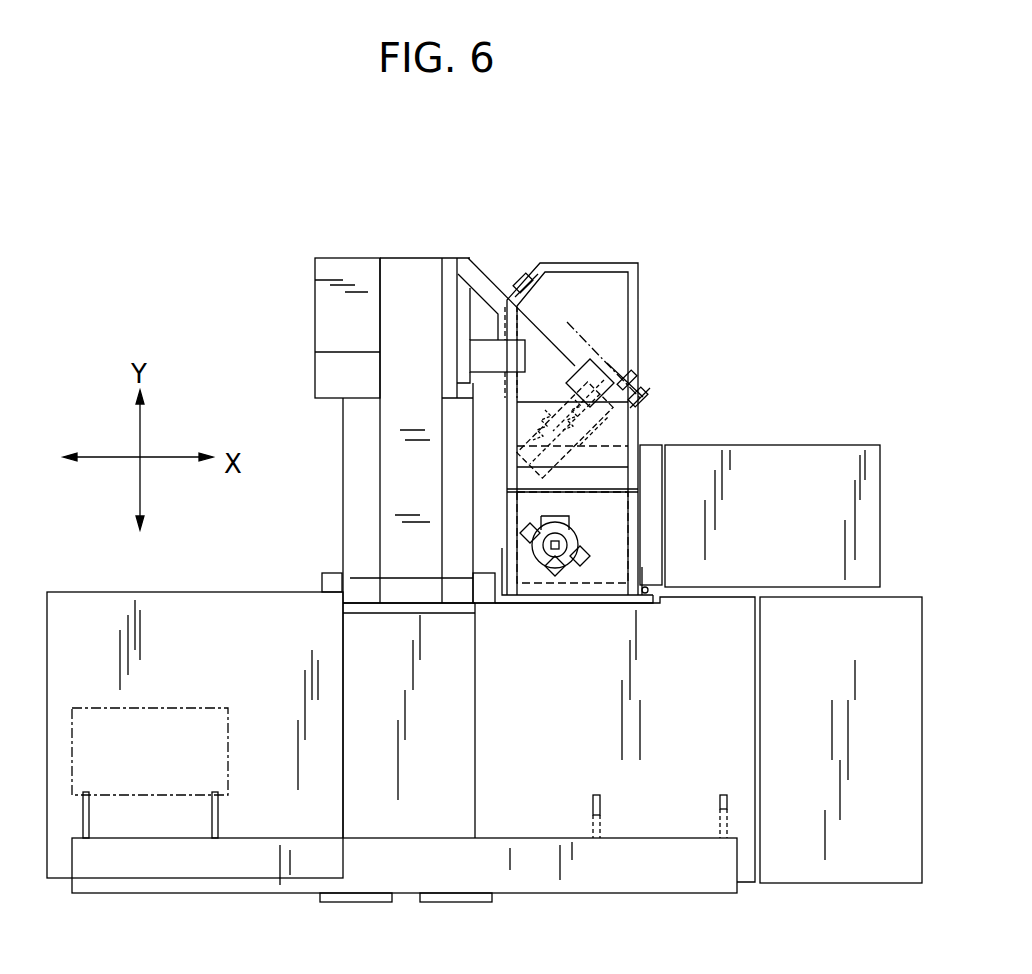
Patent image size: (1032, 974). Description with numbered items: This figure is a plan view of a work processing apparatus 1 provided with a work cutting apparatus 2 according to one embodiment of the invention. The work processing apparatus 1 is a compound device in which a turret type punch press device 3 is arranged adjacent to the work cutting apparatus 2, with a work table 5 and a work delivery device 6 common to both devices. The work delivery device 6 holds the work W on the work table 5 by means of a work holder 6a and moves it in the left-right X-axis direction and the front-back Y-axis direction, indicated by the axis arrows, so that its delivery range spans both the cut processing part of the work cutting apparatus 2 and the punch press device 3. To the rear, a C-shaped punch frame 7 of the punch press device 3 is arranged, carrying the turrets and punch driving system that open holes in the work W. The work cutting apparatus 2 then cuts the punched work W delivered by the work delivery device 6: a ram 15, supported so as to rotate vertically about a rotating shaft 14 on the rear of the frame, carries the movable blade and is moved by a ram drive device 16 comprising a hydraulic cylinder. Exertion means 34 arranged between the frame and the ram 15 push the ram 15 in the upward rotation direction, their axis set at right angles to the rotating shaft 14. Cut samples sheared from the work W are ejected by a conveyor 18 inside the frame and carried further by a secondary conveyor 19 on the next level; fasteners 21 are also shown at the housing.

The work processing apparatus 1 is at (220, 305).
The work cutting apparatus 2 is at (650, 308).
The turret type punch press device 3 is at (391, 249).
The work table 5 is at (555, 812).
The work delivery device 6 is at (232, 873).
The work holder 6a is at (88, 815).
The C-shaped punch frame 7 is at (393, 522).
The rotating shaft 14 is at (567, 322).
The ram 15 is at (625, 340).
The ram drive device 16 is at (575, 548).
The conveyor 18 is at (648, 455).
The secondary conveyor 19 is at (838, 462).
The fasteners 21 is at (520, 276).
The exertion means 34 is at (555, 370).
The work W is at (170, 708).